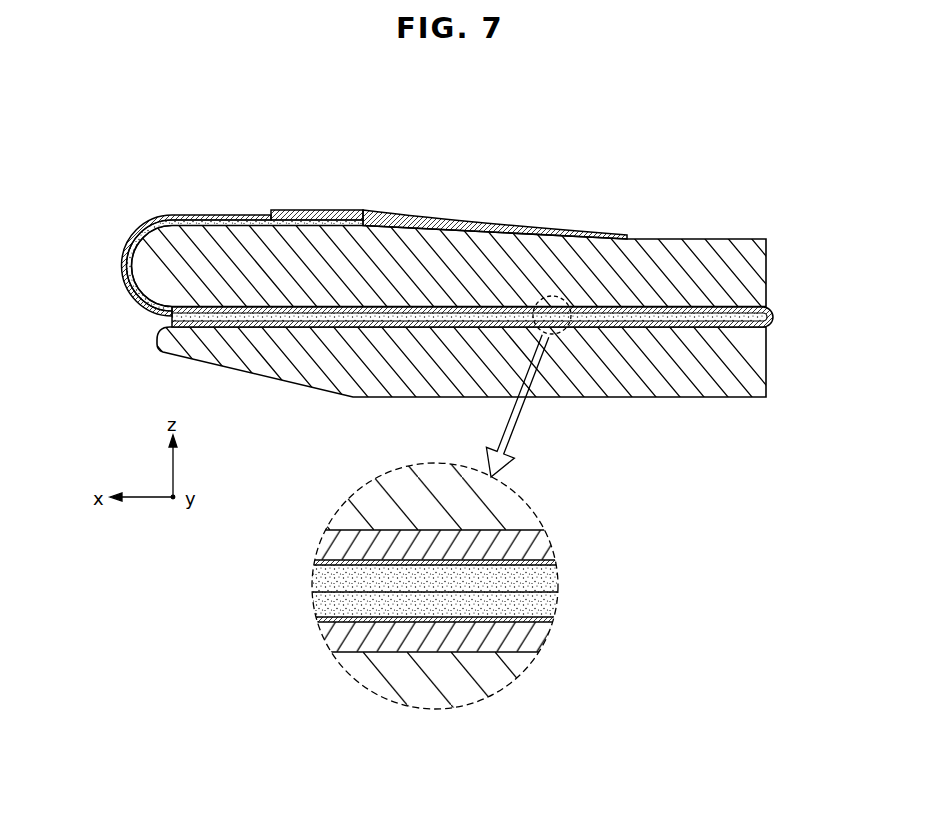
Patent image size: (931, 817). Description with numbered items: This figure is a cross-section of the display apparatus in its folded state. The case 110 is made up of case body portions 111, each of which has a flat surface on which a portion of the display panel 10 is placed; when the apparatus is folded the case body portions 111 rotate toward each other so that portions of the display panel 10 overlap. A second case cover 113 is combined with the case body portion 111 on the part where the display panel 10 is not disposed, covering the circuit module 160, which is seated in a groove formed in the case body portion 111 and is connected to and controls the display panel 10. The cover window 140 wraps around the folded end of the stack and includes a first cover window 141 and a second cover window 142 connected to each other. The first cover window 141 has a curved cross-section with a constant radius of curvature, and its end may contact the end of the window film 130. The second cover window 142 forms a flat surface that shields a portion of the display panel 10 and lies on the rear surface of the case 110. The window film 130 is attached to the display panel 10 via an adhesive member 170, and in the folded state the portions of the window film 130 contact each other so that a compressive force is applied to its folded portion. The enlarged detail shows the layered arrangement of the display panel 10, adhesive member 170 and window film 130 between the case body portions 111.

The display panel 10 is at (472, 413).
The case 110 is at (469, 465).
The case body portion 111 is at (712, 382).
The second case cover 113 is at (487, 222).
The window film 130 is at (636, 322).
The cover window 140 is at (220, 222).
The first cover window 141 is at (162, 163).
The second cover window 142 is at (213, 218).
The circuit module 160 is at (325, 212).
The adhesive member 170 is at (558, 617).